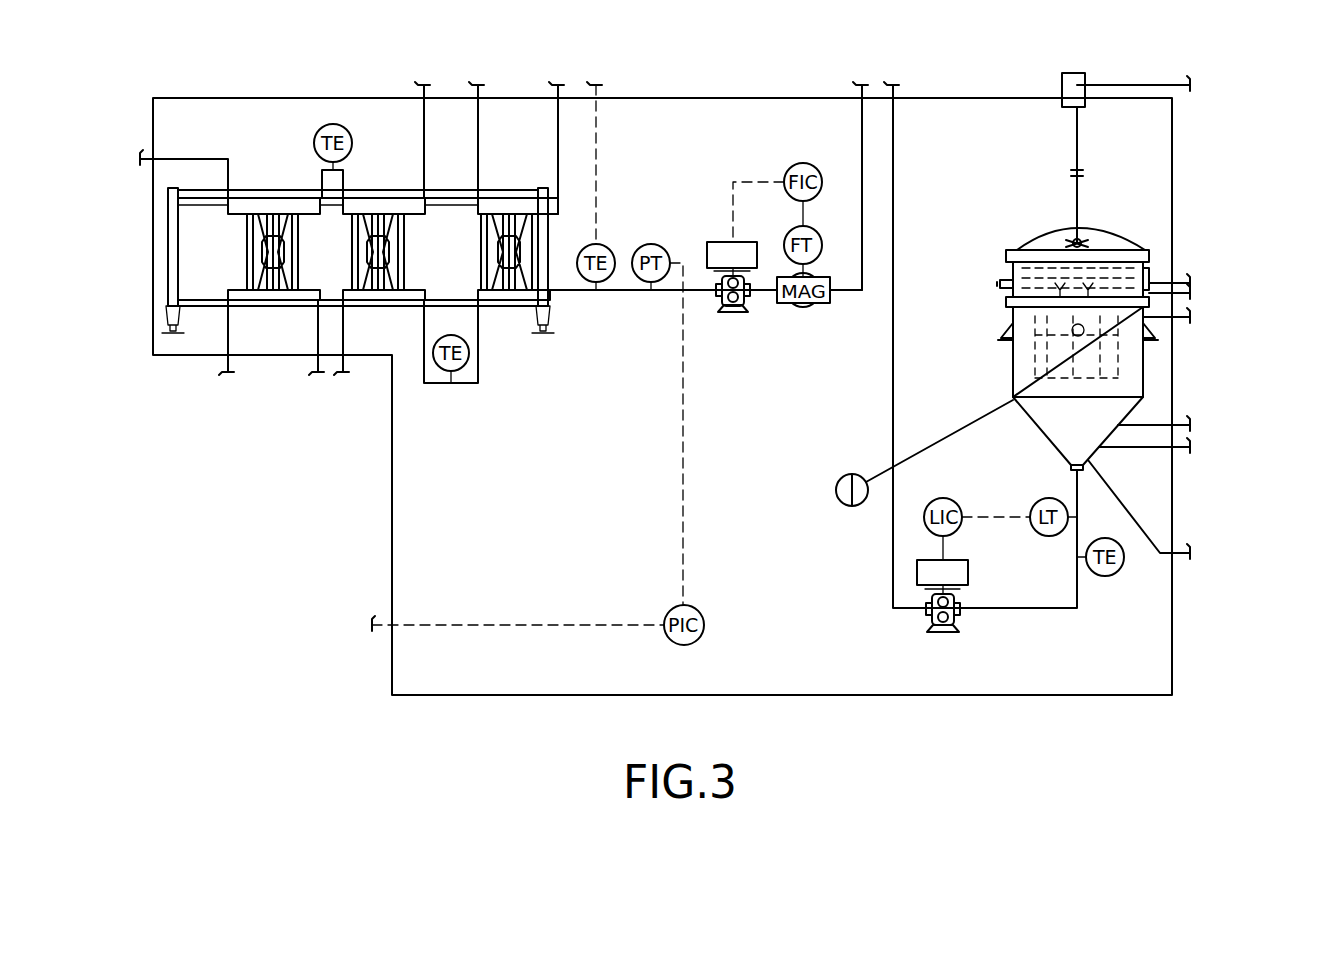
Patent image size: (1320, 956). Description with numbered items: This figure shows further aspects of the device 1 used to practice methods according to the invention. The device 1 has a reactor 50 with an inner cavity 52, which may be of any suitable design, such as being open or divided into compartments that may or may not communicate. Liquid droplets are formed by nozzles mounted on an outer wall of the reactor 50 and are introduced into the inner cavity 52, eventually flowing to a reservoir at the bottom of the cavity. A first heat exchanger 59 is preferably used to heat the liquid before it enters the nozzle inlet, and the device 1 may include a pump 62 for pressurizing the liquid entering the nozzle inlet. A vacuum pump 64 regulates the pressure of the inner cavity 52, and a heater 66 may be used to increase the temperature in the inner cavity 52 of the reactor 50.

The device 1 is at (1175, 154).
The first heat exchanger 59 is at (245, 192).
The reactor 50 is at (1027, 225).
The inner cavity 52 is at (1030, 357).
The pump 62 is at (738, 313).
The vacuum pump 64 is at (926, 612).
The heater 66 is at (838, 500).